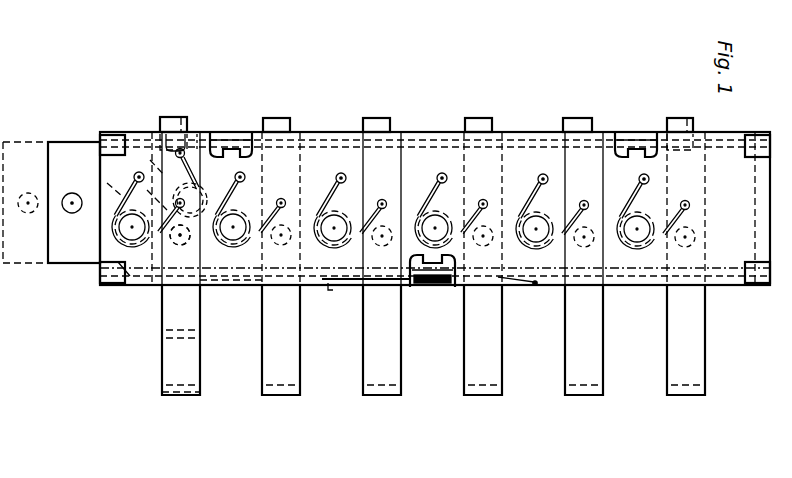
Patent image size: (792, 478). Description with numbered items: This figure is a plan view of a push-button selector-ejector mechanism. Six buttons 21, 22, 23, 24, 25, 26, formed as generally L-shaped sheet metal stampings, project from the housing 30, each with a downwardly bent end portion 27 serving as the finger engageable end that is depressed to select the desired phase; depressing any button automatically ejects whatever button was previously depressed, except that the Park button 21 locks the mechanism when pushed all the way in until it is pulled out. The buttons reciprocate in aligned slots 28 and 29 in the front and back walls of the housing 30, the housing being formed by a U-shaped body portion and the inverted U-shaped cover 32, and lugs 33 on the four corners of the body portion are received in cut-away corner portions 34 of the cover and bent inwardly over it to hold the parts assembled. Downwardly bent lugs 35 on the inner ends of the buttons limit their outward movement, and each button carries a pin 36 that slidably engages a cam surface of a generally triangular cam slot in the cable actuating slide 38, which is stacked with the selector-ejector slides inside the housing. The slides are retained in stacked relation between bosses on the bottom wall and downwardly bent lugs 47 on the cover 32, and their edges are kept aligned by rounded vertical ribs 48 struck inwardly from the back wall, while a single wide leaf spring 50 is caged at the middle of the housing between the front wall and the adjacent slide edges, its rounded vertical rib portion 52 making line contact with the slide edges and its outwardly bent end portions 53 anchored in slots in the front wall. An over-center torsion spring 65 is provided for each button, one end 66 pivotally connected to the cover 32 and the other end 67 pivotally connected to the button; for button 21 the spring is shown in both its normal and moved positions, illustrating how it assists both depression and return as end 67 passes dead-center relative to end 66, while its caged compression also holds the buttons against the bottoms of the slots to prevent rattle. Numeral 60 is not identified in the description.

The Park button 21 is at (180, 395).
The button 22 is at (278, 395).
The button 23 is at (379, 395).
The button 24 is at (480, 395).
The button 25 is at (585, 395).
The button 26 is at (685, 395).
The downwardly bent end portion 27 is at (159, 395).
The slot 28 is at (205, 286).
The slot 29 is at (198, 145).
The housing 30 is at (112, 281).
The cover 32 is at (313, 284).
The lug 33 is at (769, 136).
The cut-away corner portion 34 is at (124, 269).
The downwardly bent lug 35 is at (184, 117).
The pin 36 is at (191, 239).
The cable actuating slide 38 is at (33, 142).
The downwardly bent lug 47 is at (236, 148).
The rounded vertical rib 48 is at (165, 117).
The leaf spring 50 is at (441, 286).
The rounded vertical rib portion 52 is at (437, 262).
The outwardly bent end portion 53 is at (534, 287).
The end block 60 is at (72, 213).
The over-center type torsion spring 65 is at (75, 194).
The spring end 66 is at (126, 196).
The spring end 67 is at (185, 193).